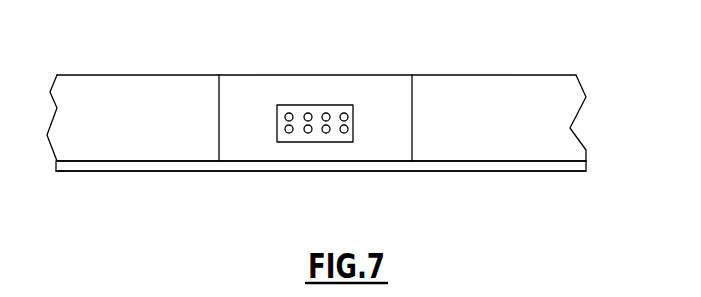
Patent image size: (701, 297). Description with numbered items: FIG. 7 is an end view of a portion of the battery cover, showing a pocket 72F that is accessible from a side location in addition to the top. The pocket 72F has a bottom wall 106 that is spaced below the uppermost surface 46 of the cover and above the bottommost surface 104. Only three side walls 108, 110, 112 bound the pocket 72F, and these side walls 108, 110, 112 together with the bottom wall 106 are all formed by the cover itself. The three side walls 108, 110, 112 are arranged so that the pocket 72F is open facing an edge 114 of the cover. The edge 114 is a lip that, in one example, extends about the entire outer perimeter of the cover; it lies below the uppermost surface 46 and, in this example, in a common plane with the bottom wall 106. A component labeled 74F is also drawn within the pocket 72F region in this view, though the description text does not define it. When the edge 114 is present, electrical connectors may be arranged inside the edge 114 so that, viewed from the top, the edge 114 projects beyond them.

The uppermost surface 46 is at (552, 75).
The pocket 72F is at (386, 103).
The electrical connector 74F is at (317, 112).
The bottommost surface 104 is at (508, 172).
The bottom wall 106 is at (250, 159).
The side wall 108 is at (228, 93).
The side wall 110 is at (252, 92).
The side wall 112 is at (412, 124).
The edge 114 is at (325, 166).